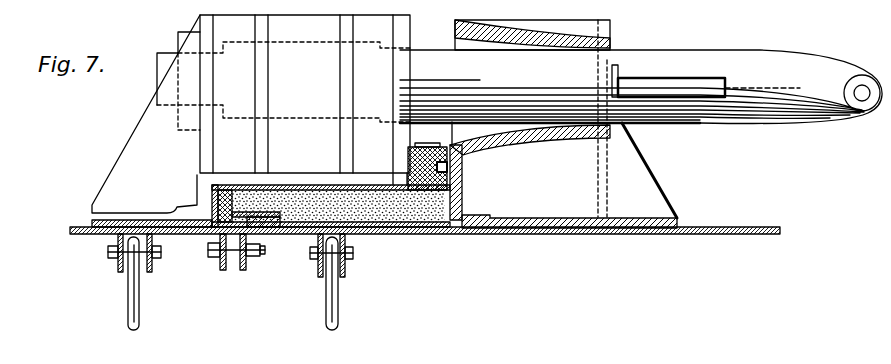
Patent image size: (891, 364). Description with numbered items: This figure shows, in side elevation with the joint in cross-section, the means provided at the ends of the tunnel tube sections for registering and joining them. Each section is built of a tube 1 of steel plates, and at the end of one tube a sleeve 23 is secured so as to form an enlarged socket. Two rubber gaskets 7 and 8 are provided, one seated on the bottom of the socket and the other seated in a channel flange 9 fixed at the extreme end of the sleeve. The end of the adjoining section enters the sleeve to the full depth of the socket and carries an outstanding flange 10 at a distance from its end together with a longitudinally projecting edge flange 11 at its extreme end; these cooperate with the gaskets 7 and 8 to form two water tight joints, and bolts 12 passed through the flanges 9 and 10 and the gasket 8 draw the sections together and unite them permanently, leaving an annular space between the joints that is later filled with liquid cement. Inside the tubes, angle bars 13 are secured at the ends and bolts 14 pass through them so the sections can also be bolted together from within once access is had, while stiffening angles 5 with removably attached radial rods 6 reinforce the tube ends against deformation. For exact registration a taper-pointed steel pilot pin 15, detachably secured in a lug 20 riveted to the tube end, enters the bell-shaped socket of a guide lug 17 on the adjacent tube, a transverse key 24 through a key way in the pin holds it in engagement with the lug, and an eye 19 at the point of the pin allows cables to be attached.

The tube 1 is at (72, 230).
The stiffening angle 5 is at (120, 270).
The radial rod 6 is at (128, 314).
The rubber gasket 7 is at (190, 201).
The rubber gasket 8 is at (426, 145).
The channel flange 9 is at (408, 150).
The outstanding flange 10 is at (463, 190).
The edge flange 11 is at (226, 190).
The bolt 12 is at (466, 165).
The angle bar 13 is at (223, 271).
The bolt 14 is at (215, 253).
The pilot pin 15 is at (767, 118).
The guide lug 17 is at (567, 208).
The eye 19 is at (860, 90).
The lug 20 is at (305, 100).
The sleeve 23 is at (293, 186).
The transverse key 24 is at (655, 85).